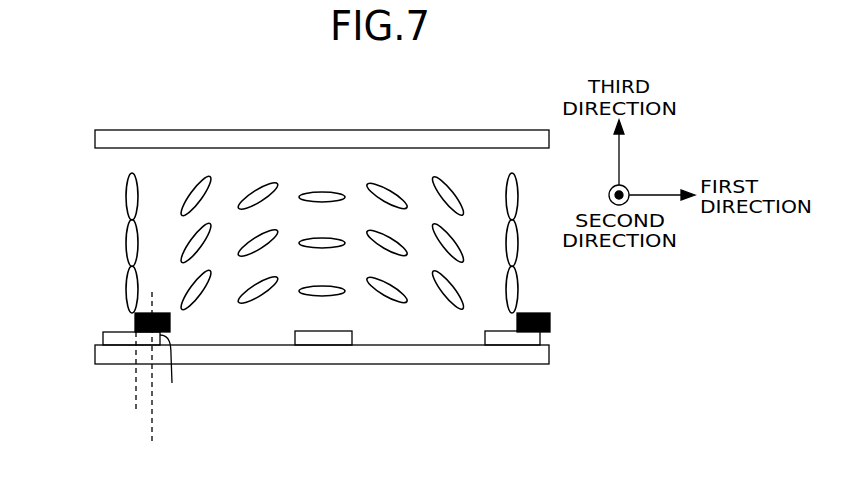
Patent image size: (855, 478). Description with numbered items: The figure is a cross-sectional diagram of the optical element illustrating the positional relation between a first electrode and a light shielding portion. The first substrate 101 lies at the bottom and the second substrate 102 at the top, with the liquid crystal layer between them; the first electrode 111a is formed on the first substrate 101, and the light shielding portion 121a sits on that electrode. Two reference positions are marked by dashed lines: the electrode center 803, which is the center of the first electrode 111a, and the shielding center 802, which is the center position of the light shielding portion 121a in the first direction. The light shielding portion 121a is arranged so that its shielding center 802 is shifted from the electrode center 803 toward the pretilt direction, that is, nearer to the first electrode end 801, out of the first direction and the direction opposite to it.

The first substrate 101 is at (95, 352).
The second substrate 102 is at (95, 134).
The first electrode 111a is at (103, 342).
The light shielding portion 121a is at (135, 322).
The first electrode end 801 is at (177, 372).
The shielding center 802 is at (152, 428).
The electrode center 803 is at (136, 398).